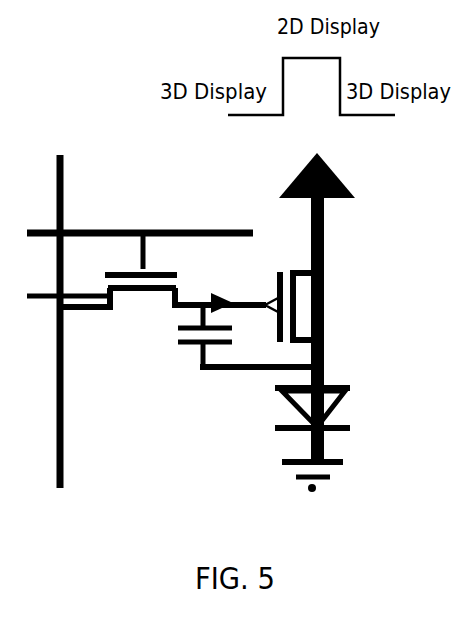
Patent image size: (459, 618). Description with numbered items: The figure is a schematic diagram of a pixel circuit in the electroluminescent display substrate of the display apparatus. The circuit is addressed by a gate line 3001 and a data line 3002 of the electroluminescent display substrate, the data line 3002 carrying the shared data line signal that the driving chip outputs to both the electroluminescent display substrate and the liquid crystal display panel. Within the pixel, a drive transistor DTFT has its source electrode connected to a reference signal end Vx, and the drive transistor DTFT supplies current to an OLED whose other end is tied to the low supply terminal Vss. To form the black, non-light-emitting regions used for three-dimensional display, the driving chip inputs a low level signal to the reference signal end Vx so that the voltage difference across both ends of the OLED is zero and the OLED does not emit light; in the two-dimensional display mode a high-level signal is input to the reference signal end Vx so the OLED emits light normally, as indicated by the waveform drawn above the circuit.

The scan line 3001 is at (140, 209).
The data line 3002 is at (68, 344).
The reference signal end Vx is at (290, 301).
The drive transistor DTFT is at (305, 296).
The element OLED is at (348, 408).
The ground voltage Vss is at (327, 490).